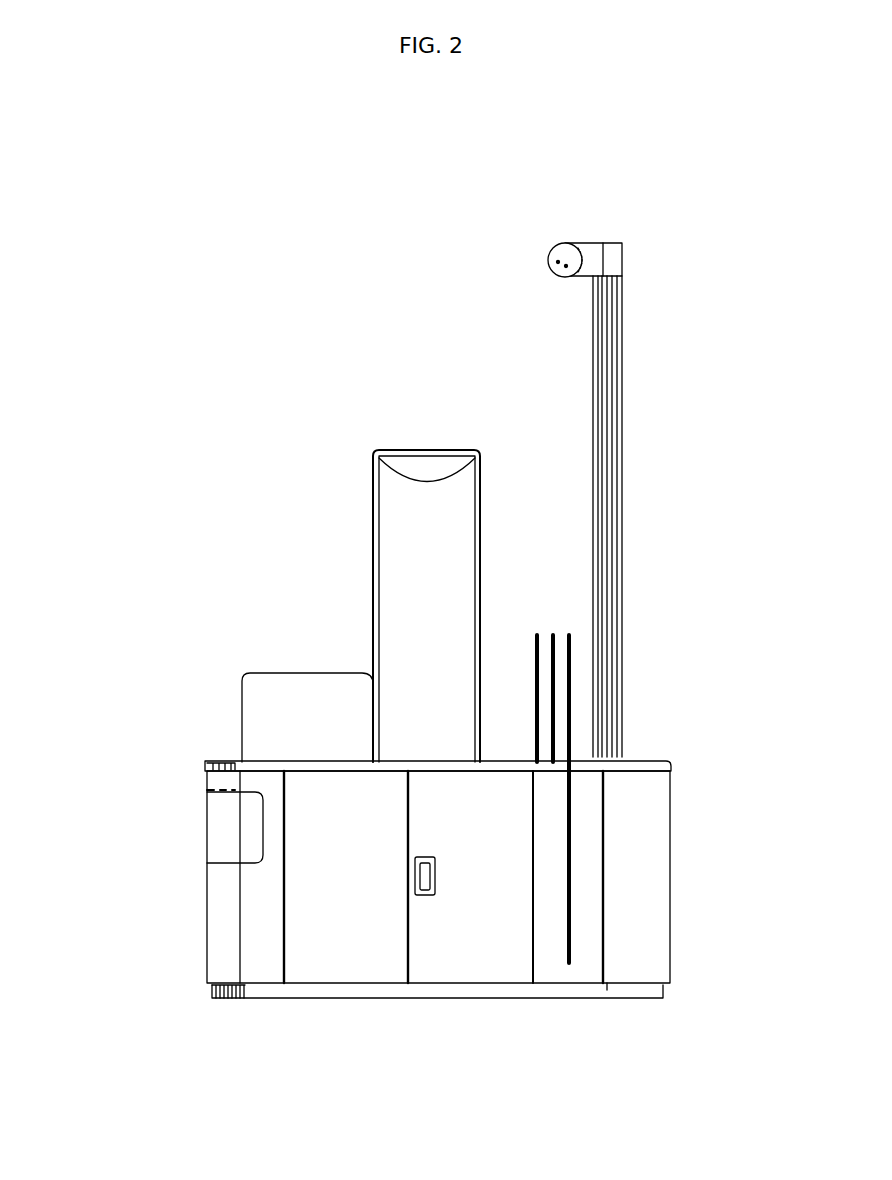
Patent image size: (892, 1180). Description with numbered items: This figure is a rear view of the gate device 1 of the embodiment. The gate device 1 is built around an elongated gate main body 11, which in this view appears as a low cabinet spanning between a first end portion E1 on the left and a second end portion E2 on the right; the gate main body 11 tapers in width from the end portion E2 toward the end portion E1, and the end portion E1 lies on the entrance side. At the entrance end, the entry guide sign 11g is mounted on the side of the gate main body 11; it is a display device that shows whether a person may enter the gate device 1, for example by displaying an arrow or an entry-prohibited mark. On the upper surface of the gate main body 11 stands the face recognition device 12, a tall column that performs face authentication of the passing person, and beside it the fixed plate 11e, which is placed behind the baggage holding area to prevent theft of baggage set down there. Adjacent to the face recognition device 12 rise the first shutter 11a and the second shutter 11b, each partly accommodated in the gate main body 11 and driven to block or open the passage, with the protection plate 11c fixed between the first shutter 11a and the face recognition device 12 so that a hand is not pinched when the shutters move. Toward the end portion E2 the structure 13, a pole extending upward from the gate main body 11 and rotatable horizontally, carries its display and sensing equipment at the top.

The gate device 1 is at (693, 289).
The gate main body 11 is at (676, 945).
The first shutter 11a is at (553, 632).
The second shutter 11b is at (572, 637).
The protection plate 11c is at (537, 632).
The fixed plate 11e is at (292, 688).
The entry guide sign 11g is at (212, 838).
The face recognition device 12 is at (428, 442).
The structure 13 is at (630, 392).
The end portion E1 is at (190, 760).
The end portion E2 is at (680, 750).